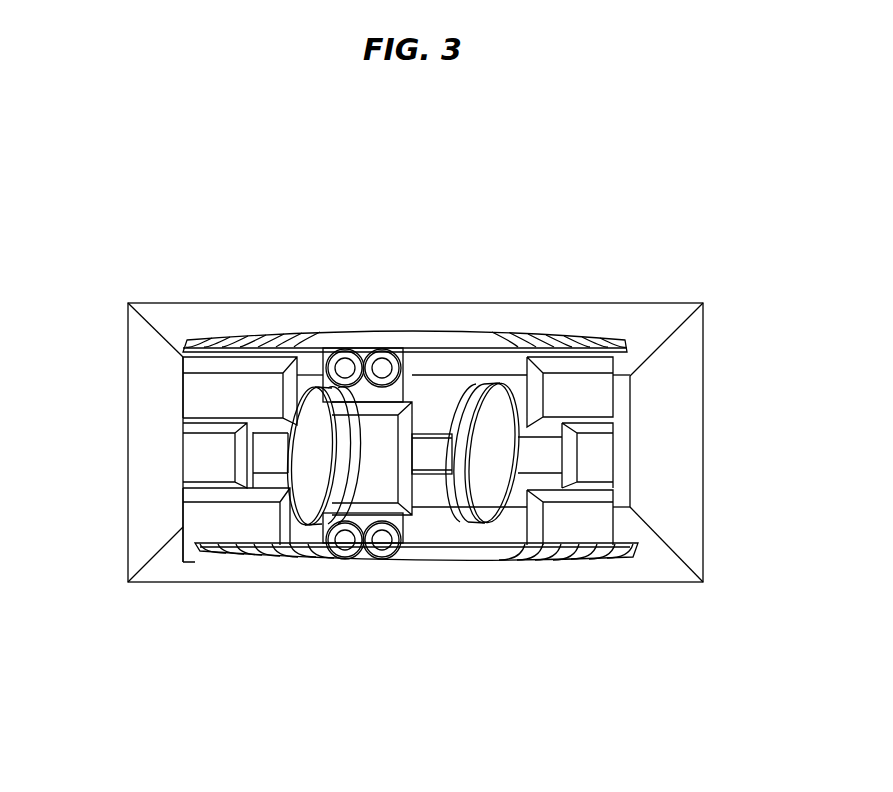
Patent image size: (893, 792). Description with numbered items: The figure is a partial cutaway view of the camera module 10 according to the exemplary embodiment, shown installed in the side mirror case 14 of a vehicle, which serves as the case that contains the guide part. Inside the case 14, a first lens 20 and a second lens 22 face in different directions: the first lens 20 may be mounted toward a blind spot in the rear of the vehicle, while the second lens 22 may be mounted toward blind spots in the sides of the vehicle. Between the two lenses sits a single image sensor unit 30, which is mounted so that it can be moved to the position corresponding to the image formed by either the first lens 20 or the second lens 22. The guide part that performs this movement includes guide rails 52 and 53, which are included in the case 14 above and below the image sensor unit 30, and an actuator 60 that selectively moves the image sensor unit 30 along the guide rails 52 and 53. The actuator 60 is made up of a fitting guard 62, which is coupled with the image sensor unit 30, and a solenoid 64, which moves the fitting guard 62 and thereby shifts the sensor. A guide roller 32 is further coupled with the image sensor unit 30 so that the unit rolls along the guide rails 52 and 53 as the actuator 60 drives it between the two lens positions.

The camera module 10 is at (392, 144).
The side mirror case 14 is at (148, 328).
The first lens 20 is at (301, 545).
The second lens 22 is at (492, 515).
The image sensor unit 30 is at (385, 495).
The guide roller 32 is at (348, 352).
The guide rail 52 is at (625, 343).
The guide rail 53 is at (633, 557).
The actuator 60 is at (607, 222).
The fitting guard 62 is at (440, 432).
The solenoid 64 is at (600, 410).